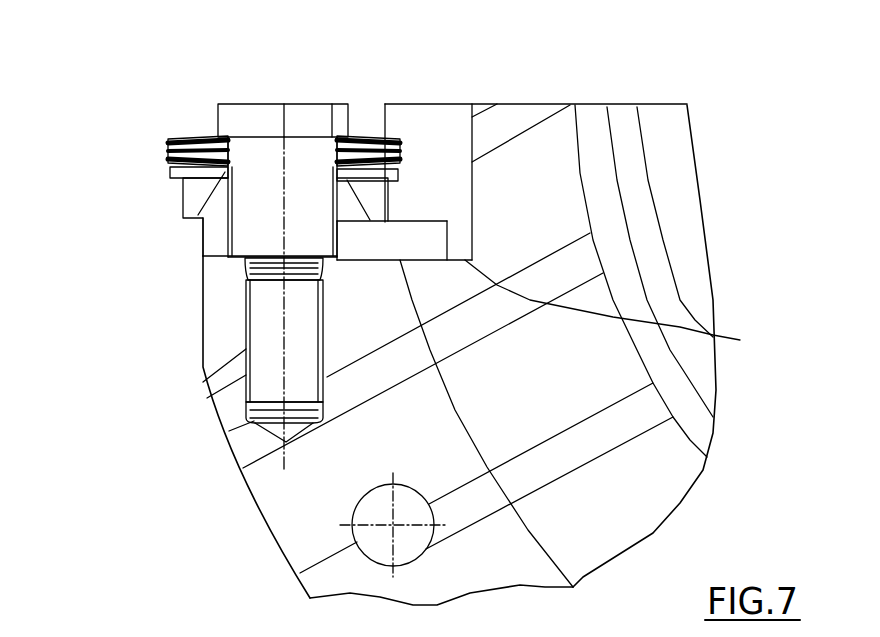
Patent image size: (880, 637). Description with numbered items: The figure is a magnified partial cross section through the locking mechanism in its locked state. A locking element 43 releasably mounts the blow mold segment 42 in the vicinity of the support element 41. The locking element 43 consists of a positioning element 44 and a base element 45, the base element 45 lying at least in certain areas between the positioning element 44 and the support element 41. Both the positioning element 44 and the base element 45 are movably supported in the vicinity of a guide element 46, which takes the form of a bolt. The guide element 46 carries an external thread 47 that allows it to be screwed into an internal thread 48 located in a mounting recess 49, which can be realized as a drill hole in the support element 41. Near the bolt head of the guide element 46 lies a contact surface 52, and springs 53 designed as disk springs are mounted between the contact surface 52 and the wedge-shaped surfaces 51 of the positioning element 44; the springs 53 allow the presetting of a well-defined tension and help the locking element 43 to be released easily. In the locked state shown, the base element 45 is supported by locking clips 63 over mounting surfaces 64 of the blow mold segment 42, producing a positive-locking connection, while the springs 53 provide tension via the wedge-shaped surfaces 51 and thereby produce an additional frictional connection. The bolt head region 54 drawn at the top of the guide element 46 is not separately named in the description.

The support element 41 is at (282, 501).
The blow mold segment 42 is at (512, 117).
The locking element 43 is at (140, 201).
The positioning element 44 is at (183, 207).
The base element 45 is at (203, 242).
The guide element 46 is at (300, 158).
The external thread 47 is at (284, 443).
The internal thread 48 is at (203, 382).
The mounting recess 49 is at (207, 398).
The wedge-shaped surface 51 is at (201, 228).
The contact surface 52 is at (333, 115).
The spring 53 is at (187, 137).
The screw head 54 is at (250, 115).
The locking clip 63 is at (430, 223).
The mounting surface 64 is at (740, 340).